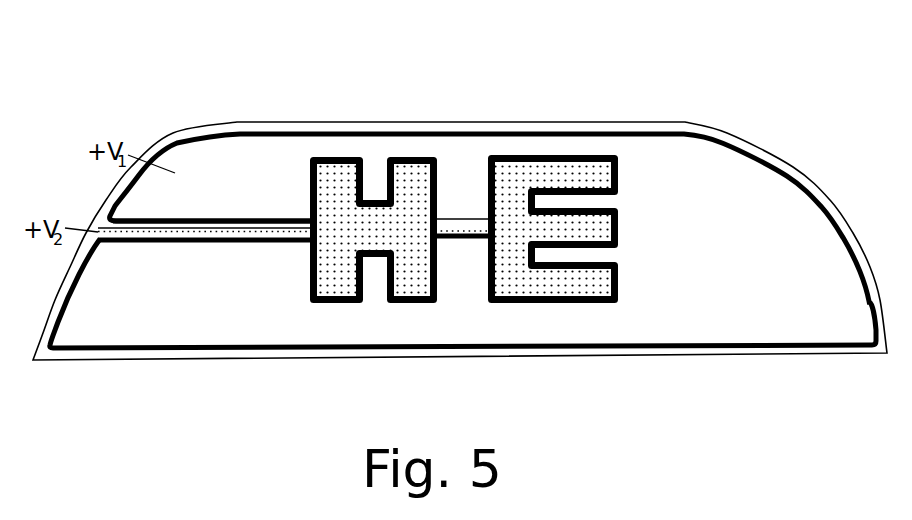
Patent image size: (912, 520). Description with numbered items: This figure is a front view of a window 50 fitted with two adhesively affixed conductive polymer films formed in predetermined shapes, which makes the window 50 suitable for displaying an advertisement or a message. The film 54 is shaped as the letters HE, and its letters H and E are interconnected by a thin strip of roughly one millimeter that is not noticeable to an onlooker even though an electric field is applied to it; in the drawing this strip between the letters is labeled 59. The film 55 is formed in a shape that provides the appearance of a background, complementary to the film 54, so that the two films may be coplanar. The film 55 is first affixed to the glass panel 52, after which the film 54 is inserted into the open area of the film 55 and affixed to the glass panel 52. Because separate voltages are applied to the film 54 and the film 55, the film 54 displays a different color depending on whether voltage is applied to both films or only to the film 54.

The window 50 is at (780, 110).
The glass panel 52 is at (365, 128).
The film 54 is at (413, 177).
The film 55 is at (240, 157).
The connecting trace 59 is at (468, 230).